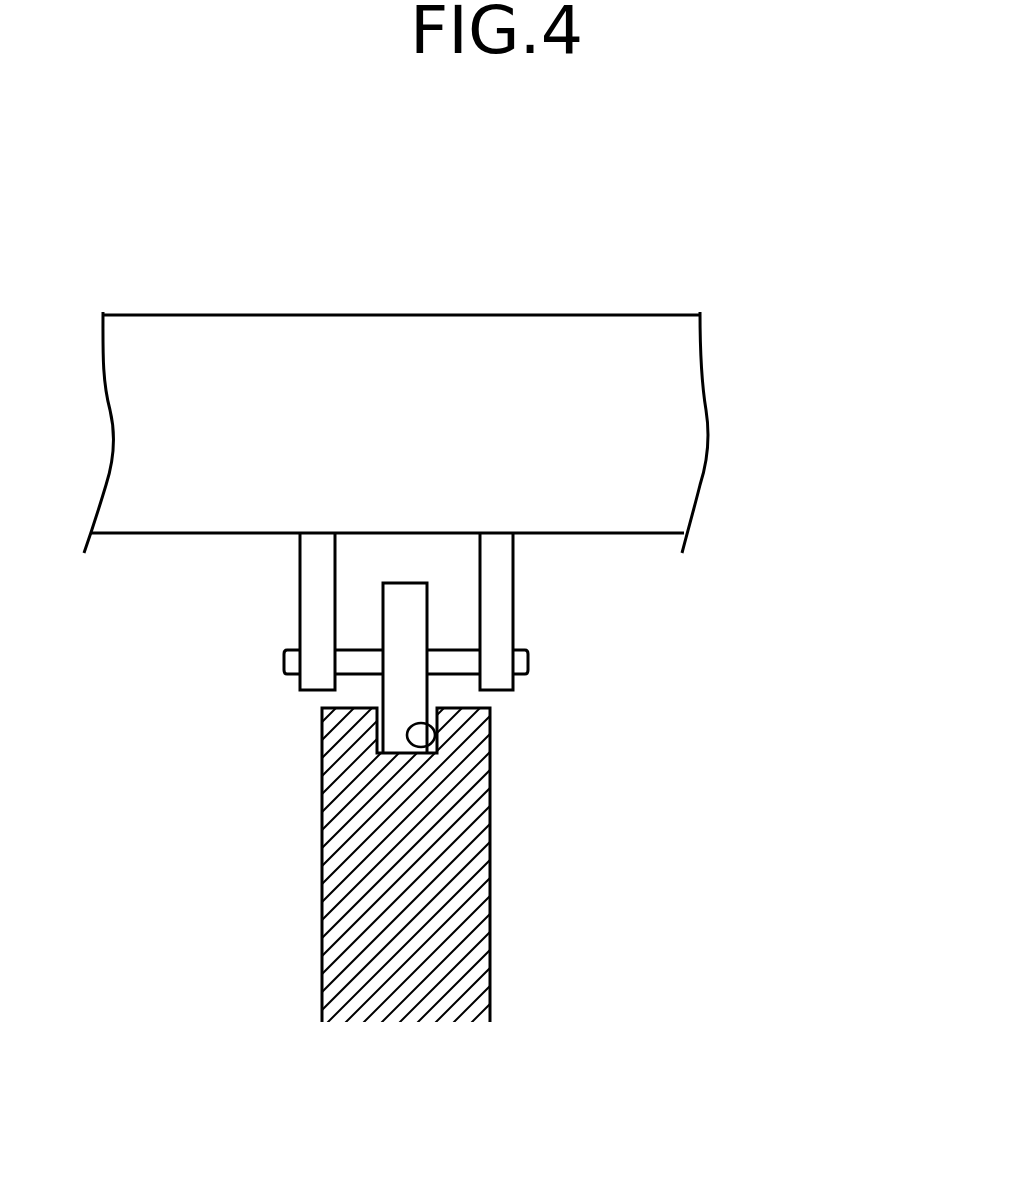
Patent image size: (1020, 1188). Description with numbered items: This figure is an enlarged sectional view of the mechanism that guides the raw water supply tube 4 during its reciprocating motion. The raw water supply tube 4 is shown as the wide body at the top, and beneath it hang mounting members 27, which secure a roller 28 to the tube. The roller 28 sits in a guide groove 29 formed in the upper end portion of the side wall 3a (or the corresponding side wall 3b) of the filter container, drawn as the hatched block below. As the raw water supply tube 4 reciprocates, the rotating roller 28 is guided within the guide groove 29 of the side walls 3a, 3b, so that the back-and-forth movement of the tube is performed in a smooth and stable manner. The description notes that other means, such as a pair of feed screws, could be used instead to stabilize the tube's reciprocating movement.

The raw water supply tube 4 is at (403, 362).
The mounting members 27 is at (507, 572).
The rollers 28 is at (403, 620).
The guide grooves 29 is at (433, 745).
The side wall 3a is at (510, 594).
The side wall 3b is at (440, 880).